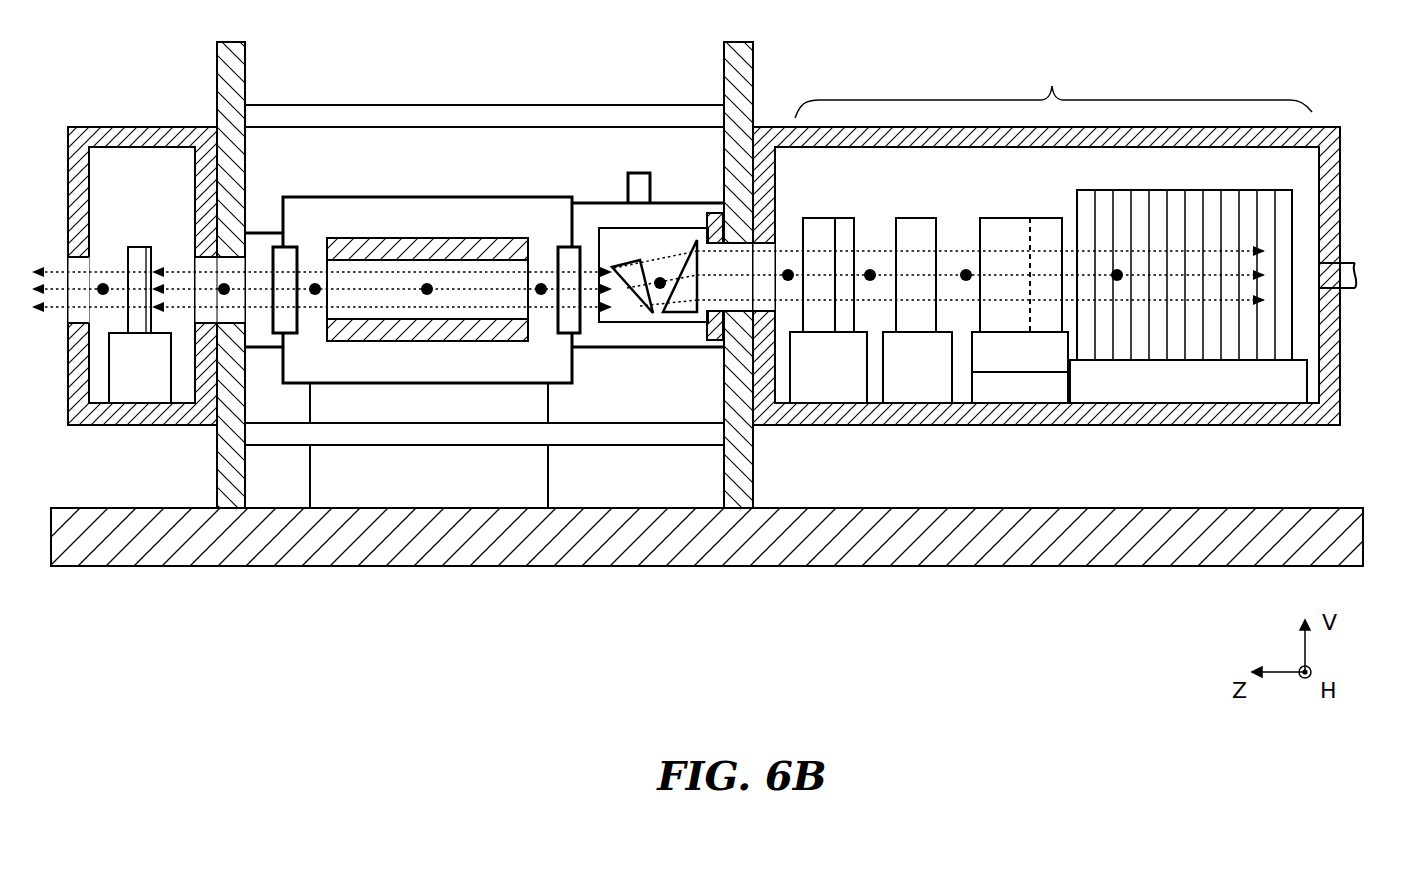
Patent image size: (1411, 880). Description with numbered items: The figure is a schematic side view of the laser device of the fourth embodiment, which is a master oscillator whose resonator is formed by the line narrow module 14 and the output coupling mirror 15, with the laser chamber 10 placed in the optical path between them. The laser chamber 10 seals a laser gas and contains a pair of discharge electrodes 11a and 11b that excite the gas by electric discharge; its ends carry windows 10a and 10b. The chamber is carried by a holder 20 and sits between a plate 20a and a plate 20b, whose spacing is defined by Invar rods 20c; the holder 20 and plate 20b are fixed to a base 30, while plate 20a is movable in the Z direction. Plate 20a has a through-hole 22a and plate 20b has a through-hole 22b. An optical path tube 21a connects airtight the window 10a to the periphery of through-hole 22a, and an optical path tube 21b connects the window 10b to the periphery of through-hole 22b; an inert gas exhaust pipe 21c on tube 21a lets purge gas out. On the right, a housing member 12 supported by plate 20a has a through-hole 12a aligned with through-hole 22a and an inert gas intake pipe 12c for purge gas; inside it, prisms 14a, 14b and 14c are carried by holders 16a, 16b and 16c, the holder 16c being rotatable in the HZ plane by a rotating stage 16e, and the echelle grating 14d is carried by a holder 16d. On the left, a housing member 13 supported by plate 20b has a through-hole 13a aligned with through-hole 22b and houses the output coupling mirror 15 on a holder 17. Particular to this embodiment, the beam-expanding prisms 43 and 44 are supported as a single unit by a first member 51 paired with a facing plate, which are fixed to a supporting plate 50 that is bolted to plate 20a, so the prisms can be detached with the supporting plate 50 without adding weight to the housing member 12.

The laser chamber 10 is at (418, 197).
The window 10a is at (560, 247).
The window 10b is at (295, 247).
The discharge electrode 11a is at (427, 238).
The discharge electrode 11b is at (427, 341).
The housing member 12 is at (785, 127).
The through-hole 12a is at (779, 252).
The inert gas intake pipe 12c is at (1345, 263).
The housing member 13 is at (137, 127).
The through-hole 13a is at (190, 262).
The line narrow module 14 is at (1051, 263).
The prism 14a is at (850, 218).
The prism 14b is at (925, 218).
The prism 14c is at (1008, 218).
The grating 14d is at (1170, 190).
The output coupling mirror 15 is at (135, 290).
The holder 16a is at (832, 403).
The holder 16b is at (922, 403).
The holder 16c is at (1000, 372).
The holder 16d is at (1132, 403).
The rotating stage 16e is at (1048, 403).
The holder 17 is at (140, 385).
The holder 20 is at (485, 272).
The plate 20a is at (724, 78).
The plate 20b is at (245, 78).
The Invar rod 20c is at (500, 105).
The optical path tube 21a is at (618, 347).
The optical path tube 21b is at (265, 347).
The inert gas exhaust pipe 21c is at (628, 185).
The through-hole 22a is at (722, 250).
The through-hole 22b is at (248, 262).
The base 30 is at (112, 566).
The prism 43 is at (630, 265).
The prism 44 is at (690, 255).
The supporting plate 50 is at (712, 340).
The first member 51 is at (663, 322).